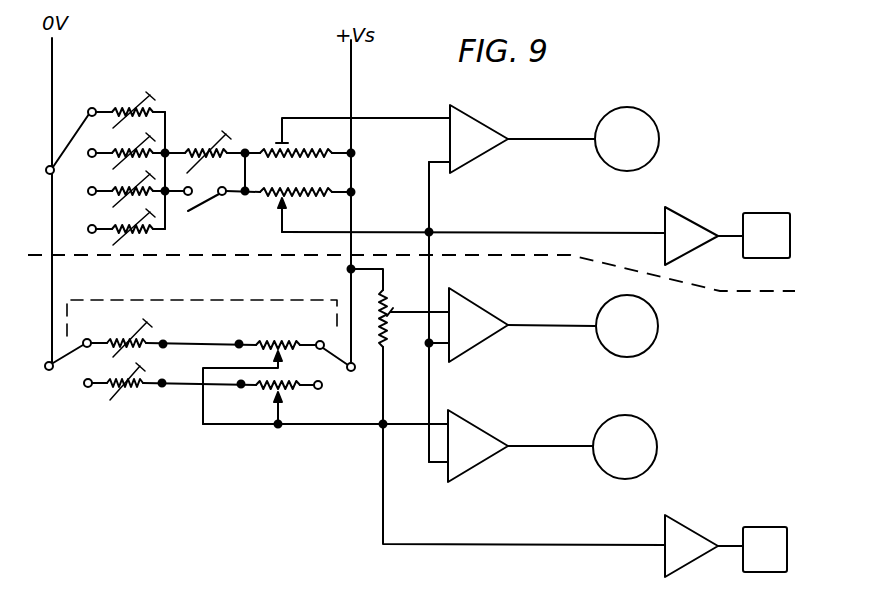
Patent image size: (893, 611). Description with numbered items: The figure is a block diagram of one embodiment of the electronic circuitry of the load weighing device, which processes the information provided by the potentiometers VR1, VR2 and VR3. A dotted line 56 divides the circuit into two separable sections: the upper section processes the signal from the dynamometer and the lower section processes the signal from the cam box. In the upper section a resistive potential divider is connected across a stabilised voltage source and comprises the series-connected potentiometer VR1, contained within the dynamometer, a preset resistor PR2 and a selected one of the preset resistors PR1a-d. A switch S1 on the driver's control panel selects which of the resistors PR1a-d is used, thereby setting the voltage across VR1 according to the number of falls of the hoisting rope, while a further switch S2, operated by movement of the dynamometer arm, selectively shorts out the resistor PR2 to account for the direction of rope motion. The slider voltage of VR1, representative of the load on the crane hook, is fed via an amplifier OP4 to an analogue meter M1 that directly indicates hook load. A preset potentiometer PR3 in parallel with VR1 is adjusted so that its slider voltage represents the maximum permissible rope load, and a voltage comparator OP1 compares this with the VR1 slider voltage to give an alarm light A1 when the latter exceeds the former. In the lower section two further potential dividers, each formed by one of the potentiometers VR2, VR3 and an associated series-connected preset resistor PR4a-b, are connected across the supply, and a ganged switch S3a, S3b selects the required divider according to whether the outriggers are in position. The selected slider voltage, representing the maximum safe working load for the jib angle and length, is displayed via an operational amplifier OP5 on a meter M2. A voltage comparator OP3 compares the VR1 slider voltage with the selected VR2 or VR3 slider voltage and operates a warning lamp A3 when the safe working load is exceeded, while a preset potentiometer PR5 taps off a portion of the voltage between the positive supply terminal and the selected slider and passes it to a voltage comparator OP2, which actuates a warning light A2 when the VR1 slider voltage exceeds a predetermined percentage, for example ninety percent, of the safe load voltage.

The dotted line 56 is at (718, 292).
The switch S1 is at (71, 150).
The further switch S2 is at (212, 190).
The ganged switch section S3a is at (56, 366).
The ganged switch section S3b is at (343, 370).
The preset resistors PR1a-d is at (131, 153).
The preset resistor PR2 is at (212, 140).
The preset potentiometer PR3 is at (355, 137).
The preset resistors PR4a-b is at (202, 350).
The preset potentiometer PR5 is at (399, 307).
The potentiometer VR1 is at (462, 212).
The potentiometer VR2 is at (259, 369).
The potentiometer VR3 is at (293, 404).
The voltage comparator OP1 is at (512, 139).
The voltage comparator OP2 is at (511, 325).
The voltage comparator OP3 is at (488, 446).
The amplifier OP4 is at (704, 236).
The operational amplifier OP5 is at (704, 546).
The alarm light A1 is at (627, 139).
The warning light A2 is at (627, 326).
The warning lamp A3 is at (625, 447).
The analogue meter M1 is at (766, 235).
The meter M2 is at (765, 549).